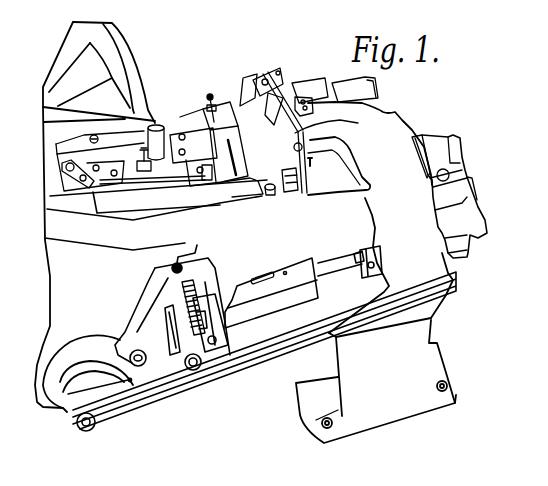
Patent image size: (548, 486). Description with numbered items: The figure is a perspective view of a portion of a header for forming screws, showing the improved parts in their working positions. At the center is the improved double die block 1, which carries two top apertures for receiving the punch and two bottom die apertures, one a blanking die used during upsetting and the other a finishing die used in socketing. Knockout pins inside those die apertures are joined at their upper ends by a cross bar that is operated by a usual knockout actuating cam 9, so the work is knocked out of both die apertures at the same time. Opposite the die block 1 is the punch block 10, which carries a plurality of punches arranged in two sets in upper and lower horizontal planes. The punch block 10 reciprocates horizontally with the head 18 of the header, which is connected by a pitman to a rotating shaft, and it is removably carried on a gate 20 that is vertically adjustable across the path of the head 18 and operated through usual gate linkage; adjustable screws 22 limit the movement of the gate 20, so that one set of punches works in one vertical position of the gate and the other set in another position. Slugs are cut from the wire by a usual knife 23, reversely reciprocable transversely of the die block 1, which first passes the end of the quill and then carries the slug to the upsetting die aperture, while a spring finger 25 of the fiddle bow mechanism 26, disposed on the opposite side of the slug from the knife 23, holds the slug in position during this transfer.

The double die block 1 is at (315, 173).
The knockout actuating cam 9 is at (484, 247).
The punch block 10 is at (273, 196).
The head 18 is at (248, 181).
The gate 20 is at (222, 112).
The adjustable screws 22 is at (208, 105).
The knife 23 is at (293, 192).
The spring finger 25 is at (305, 192).
The fiddle bow mechanism 26 is at (327, 121).